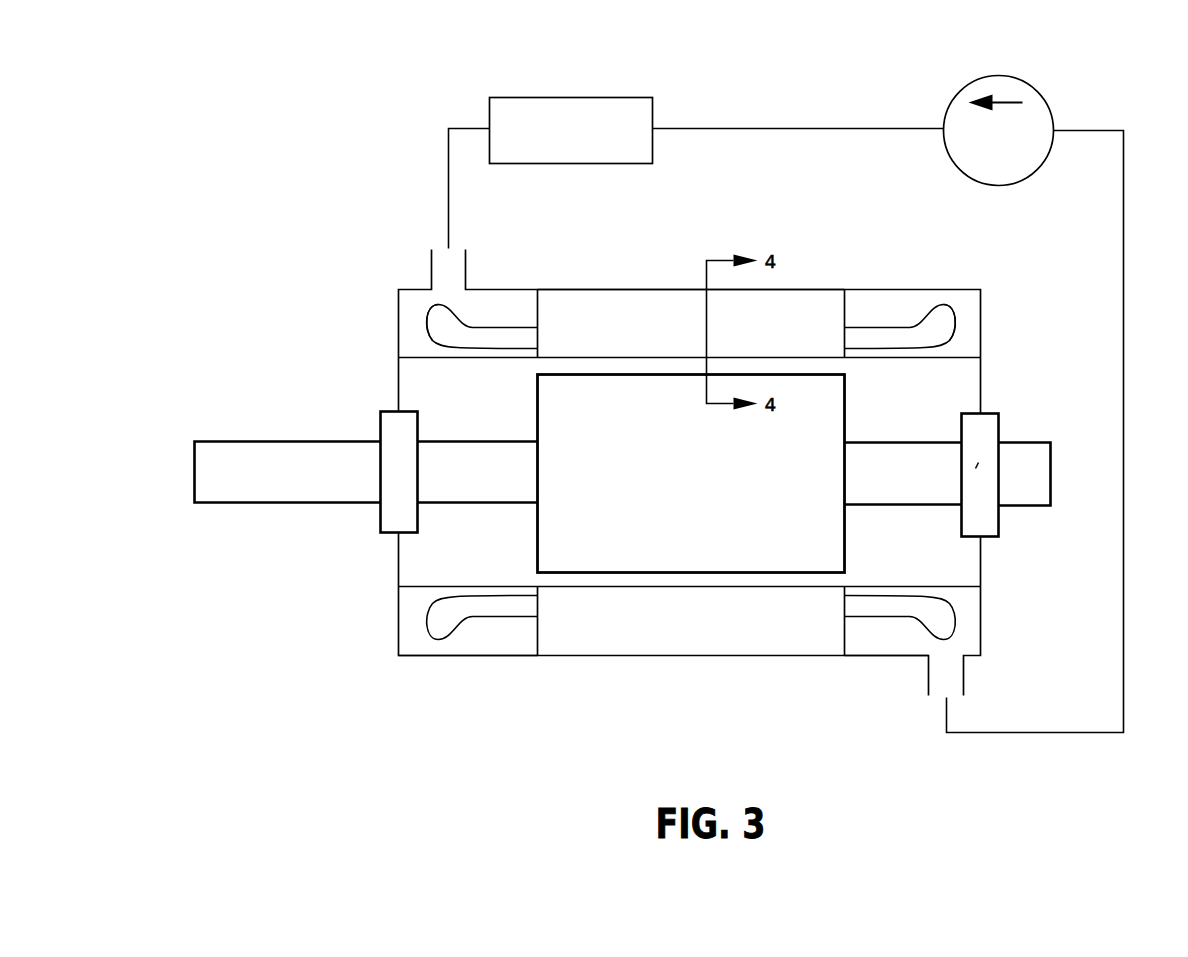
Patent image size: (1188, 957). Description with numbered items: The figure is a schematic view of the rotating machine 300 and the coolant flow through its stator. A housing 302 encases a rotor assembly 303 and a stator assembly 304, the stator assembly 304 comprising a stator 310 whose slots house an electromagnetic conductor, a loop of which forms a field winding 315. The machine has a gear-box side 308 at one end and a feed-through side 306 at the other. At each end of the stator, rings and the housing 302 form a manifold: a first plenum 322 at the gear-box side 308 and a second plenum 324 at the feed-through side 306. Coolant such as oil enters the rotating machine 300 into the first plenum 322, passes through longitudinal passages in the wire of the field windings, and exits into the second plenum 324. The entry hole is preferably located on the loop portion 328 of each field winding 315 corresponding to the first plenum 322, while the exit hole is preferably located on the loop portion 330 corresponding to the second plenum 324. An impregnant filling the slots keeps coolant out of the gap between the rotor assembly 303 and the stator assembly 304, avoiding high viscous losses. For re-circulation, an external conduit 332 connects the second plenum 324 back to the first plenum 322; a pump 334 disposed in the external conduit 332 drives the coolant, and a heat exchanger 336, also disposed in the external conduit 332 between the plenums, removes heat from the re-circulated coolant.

The rotating machine 300 is at (269, 73).
The housing 302 is at (715, 473).
The rotor assembly 303 is at (815, 386).
The stator assembly 304 is at (827, 280).
The feed-through side 306 is at (873, 672).
The gear-box side 308 is at (443, 672).
The stator 310 is at (611, 294).
The field winding 315 is at (972, 351).
The first plenum 322 is at (483, 318).
The second plenum 324 is at (857, 318).
The loop portion 328 is at (428, 318).
The loop portion 330 is at (935, 304).
The external conduit 332 is at (1121, 286).
The pump 334 is at (952, 96).
The heat exchanger 336 is at (522, 97).